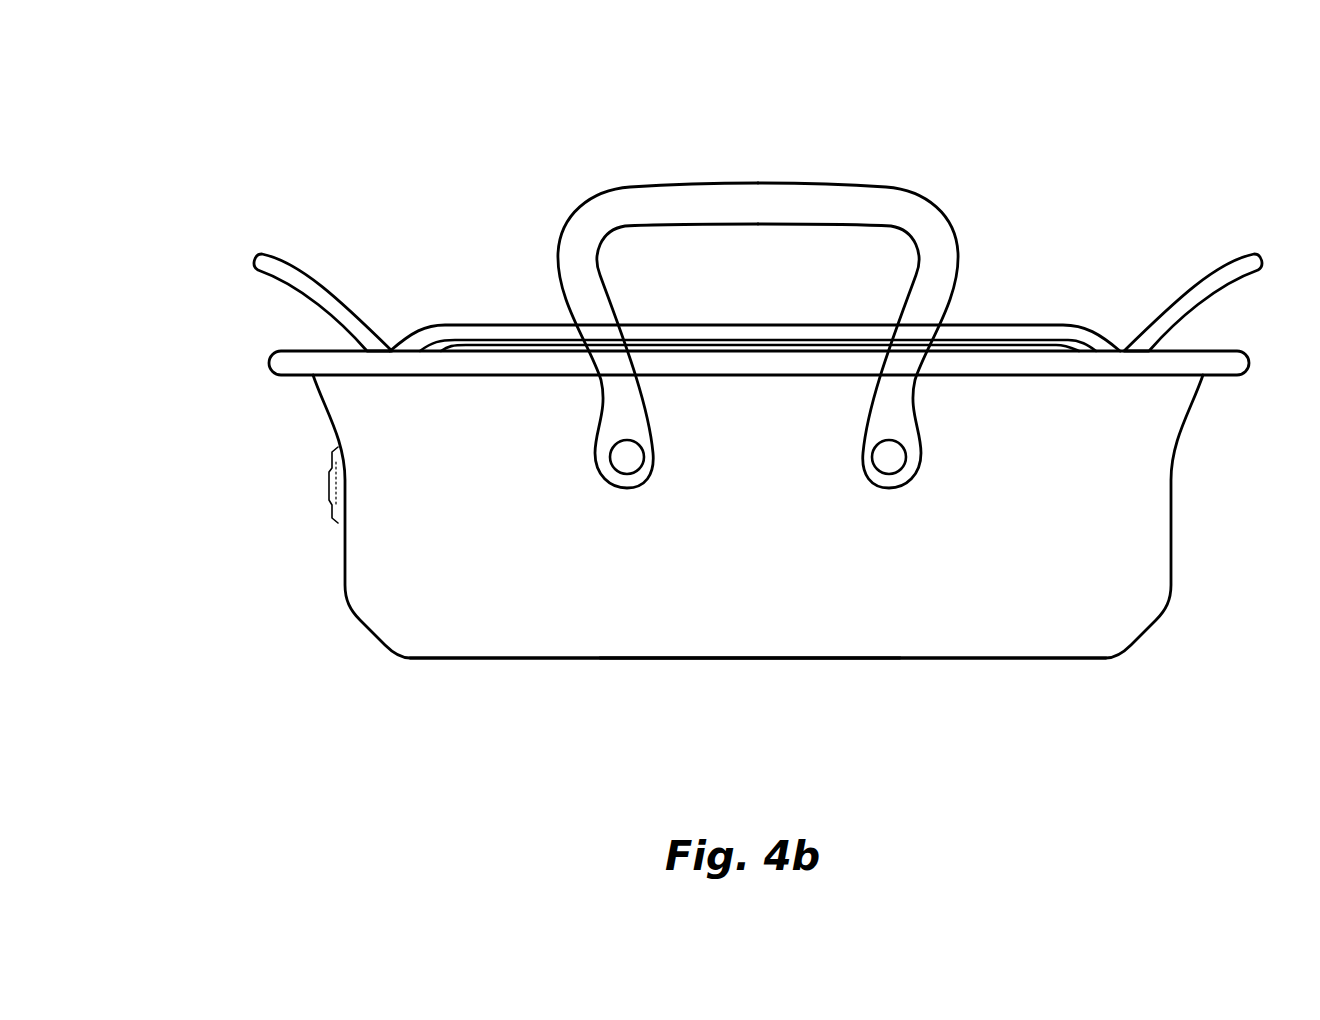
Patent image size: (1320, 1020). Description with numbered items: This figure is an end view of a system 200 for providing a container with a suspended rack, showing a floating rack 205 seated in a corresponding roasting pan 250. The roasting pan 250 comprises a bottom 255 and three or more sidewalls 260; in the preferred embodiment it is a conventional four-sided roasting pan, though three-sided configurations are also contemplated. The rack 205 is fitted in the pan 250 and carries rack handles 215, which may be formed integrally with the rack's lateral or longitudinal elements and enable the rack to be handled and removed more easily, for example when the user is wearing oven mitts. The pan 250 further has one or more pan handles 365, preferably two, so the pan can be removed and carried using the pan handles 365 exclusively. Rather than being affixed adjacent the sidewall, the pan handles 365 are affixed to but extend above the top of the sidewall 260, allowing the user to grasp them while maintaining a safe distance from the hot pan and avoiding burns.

The system 200 is at (192, 131).
The floating rack 205 is at (511, 316).
The rack handles 215 is at (288, 262).
The roasting pan 250 is at (600, 674).
The bottom 255 is at (728, 660).
The sidewalls 260 is at (345, 557).
The pan handles 365 is at (795, 185).